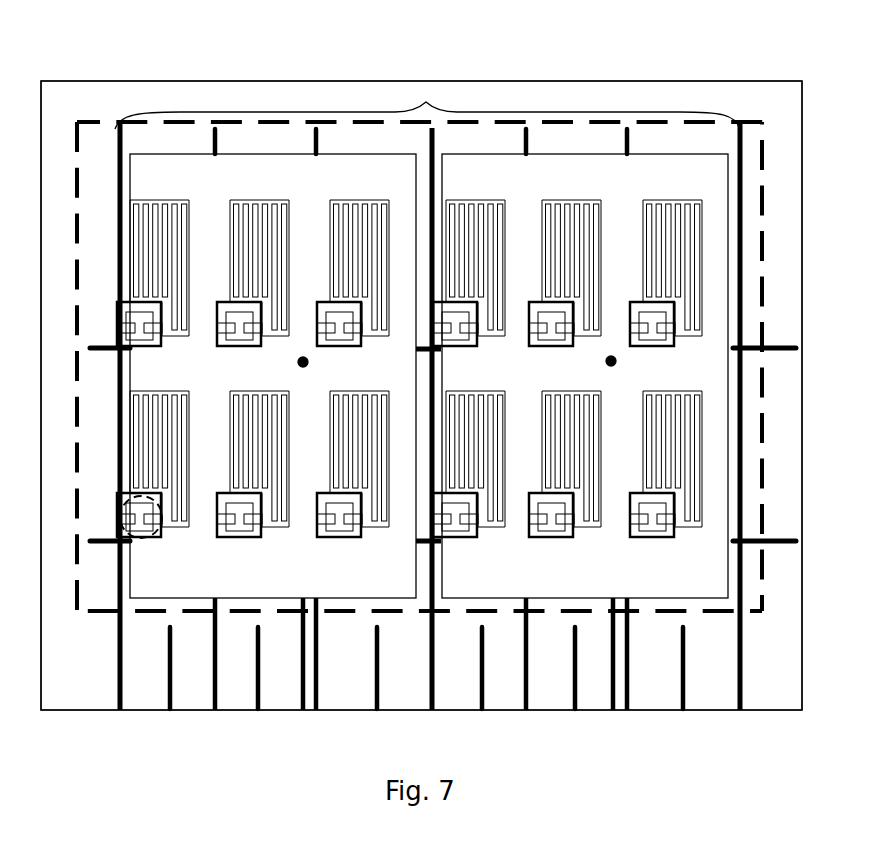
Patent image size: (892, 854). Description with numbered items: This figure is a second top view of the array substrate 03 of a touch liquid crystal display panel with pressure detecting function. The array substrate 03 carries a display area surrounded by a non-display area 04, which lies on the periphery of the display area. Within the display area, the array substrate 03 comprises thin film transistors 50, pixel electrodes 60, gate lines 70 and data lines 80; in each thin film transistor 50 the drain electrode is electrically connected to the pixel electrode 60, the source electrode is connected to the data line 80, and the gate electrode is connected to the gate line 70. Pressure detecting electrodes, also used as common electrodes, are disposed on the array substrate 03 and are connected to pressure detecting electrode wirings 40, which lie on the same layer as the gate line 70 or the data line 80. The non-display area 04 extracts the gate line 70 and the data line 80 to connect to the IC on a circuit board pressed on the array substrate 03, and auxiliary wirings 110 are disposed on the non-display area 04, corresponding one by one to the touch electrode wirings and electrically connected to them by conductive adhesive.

The array substrate 03 is at (183, 30).
The non-display area 04 is at (568, 98).
The data line 80 is at (420, 348).
The pixel electrode 60 is at (140, 230).
The thin film transistor 50 is at (124, 502).
The gate line 70 is at (97, 345).
The pressure detecting electrode wiring 40 is at (303, 712).
The auxiliary wiring 110 is at (170, 712).